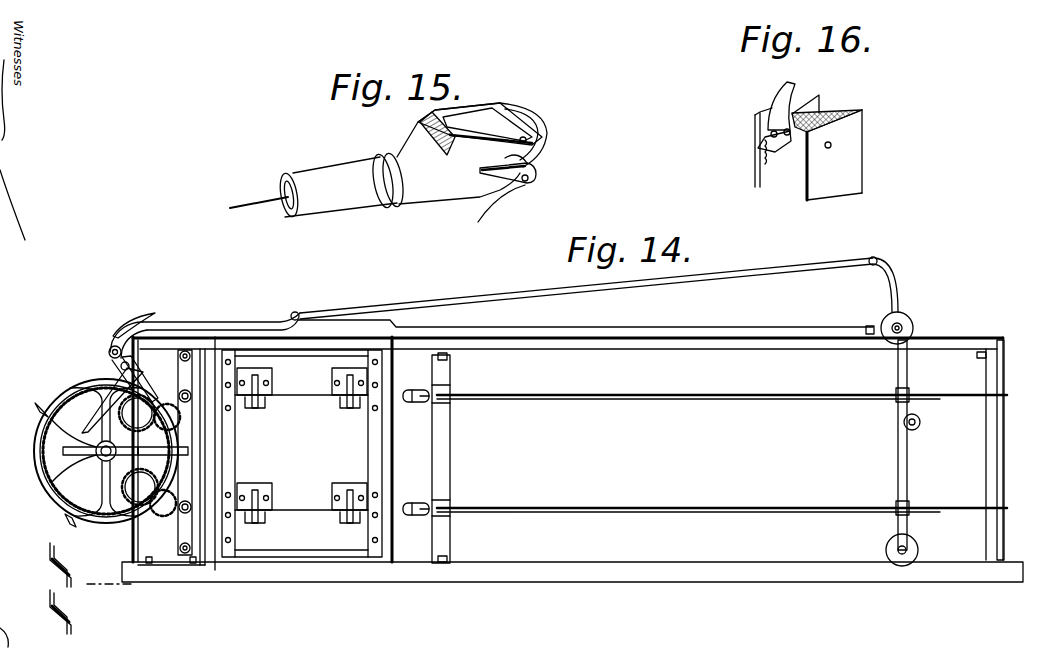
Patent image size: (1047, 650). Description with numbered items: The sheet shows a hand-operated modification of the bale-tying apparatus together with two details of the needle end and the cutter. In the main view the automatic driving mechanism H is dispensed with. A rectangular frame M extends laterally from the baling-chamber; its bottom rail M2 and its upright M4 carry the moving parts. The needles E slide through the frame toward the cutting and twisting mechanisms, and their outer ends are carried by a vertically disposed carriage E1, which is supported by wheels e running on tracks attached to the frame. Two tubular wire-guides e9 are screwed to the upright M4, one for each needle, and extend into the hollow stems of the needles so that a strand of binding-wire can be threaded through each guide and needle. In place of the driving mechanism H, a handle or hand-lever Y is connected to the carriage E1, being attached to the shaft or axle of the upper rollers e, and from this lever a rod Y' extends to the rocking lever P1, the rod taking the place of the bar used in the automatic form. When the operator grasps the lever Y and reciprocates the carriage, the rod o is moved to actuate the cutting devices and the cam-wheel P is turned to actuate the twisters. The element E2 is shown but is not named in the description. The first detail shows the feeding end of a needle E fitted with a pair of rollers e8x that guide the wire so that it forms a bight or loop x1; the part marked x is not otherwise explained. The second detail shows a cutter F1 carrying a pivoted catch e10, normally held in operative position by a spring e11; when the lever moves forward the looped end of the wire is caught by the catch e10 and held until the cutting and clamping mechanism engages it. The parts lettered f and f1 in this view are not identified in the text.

In FIG. 14, the rocking lever P1 is at (110, 340).
In FIG. 14, the cam-wheel P is at (47, 497).
In FIG. 14, the needle E is at (697, 384).
In FIG. 14, the carriage E1 is at (713, 500).
In FIG. 14, the vertical arm E2 is at (871, 445).
In FIG. 14, the rectangular frame M is at (963, 340).
In FIG. 14, the bottom rail M2 is at (698, 545).
In FIG. 14, the vertical support M4 is at (993, 447).
In FIG. 14, the hand-lever Y is at (609, 285).
In FIG. 14, the rod Y' is at (317, 292).
In FIG. 14, the rod o is at (878, 325).
In FIG. 14, the wheels e is at (906, 320).
In FIG. 14, the tubular wire-guide e9 is at (928, 542).
In FIG. 15, the driving mechanism H is at (350, 193).
In FIG. 15, the wire x is at (257, 214).
In FIG. 15, the bight or loop x1 is at (540, 141).
In FIG. 15, the rollers e8x is at (523, 131).
In FIG. 16, the cutter F1 is at (857, 152).
In FIG. 16, the hatched top plate f1 is at (830, 103).
In FIG. 16, the pivoted catch e10 is at (796, 122).
In FIG. 16, the pawl f is at (768, 112).
In FIG. 16, the spring e11 is at (760, 147).